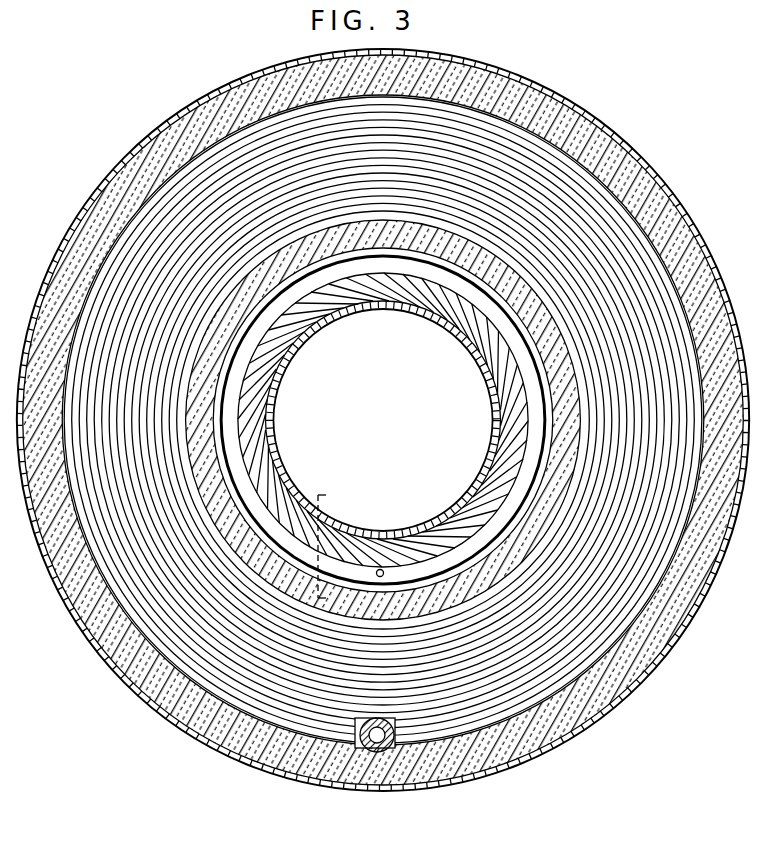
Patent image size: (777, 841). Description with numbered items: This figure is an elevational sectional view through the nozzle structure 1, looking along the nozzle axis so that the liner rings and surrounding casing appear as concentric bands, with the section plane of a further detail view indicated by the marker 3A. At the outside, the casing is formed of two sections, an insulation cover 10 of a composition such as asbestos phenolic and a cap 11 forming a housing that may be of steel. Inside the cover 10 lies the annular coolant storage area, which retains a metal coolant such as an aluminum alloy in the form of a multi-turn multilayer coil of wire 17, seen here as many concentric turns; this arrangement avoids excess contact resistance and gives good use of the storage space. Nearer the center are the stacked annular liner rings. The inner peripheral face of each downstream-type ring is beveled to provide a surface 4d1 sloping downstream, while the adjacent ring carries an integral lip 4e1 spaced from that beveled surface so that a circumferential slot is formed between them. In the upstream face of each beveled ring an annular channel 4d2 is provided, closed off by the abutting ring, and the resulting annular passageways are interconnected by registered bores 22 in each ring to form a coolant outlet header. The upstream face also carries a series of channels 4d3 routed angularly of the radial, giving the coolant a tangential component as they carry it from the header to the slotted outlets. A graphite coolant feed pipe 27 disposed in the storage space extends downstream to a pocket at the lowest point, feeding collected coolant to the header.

The nozzle structure 1 is at (192, 90).
The insulation cover 10 is at (172, 136).
The cap 11 is at (118, 173).
The multi-turn multilayer coil of wire 17 is at (120, 240).
The beveled surface 4d1 is at (452, 329).
The annular channel 4d2 is at (547, 373).
The channels or grooves 4d3 is at (272, 358).
The integral lip 4e1 is at (273, 433).
The registered bores 22 is at (382, 570).
The section line 3A is at (326, 496).
The coolant feed pipe 27 is at (380, 752).